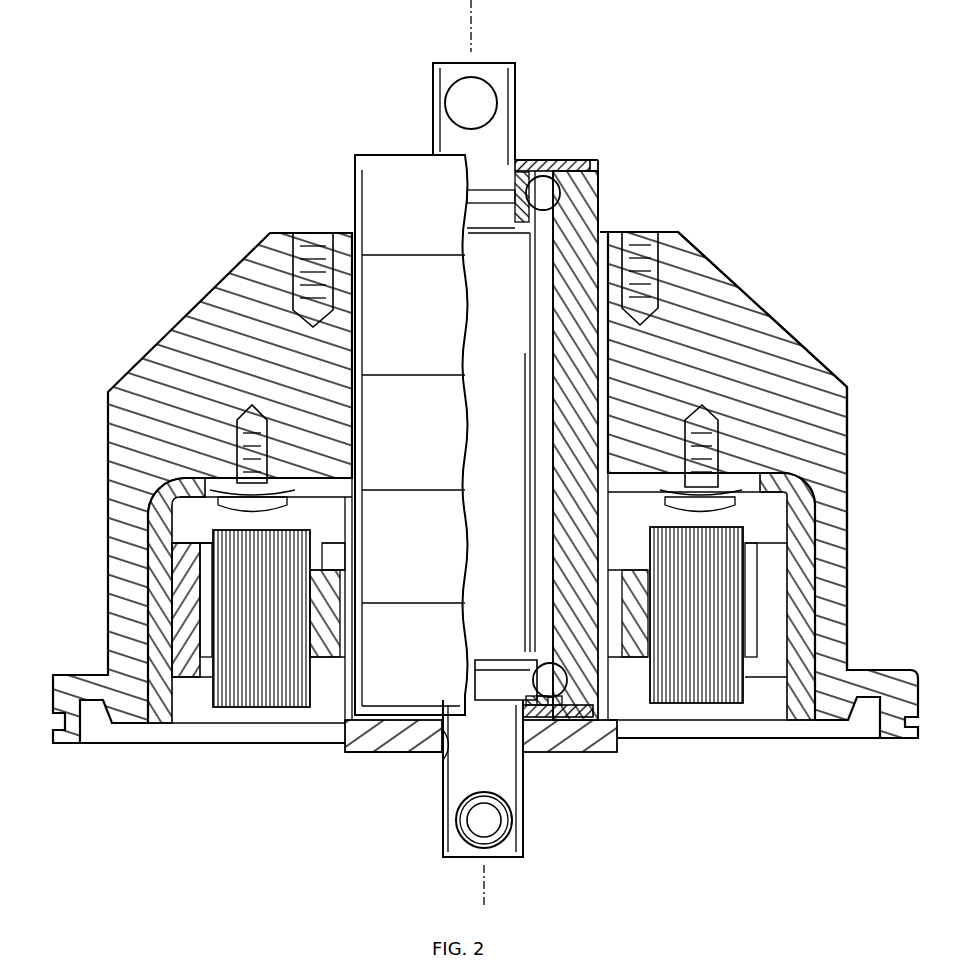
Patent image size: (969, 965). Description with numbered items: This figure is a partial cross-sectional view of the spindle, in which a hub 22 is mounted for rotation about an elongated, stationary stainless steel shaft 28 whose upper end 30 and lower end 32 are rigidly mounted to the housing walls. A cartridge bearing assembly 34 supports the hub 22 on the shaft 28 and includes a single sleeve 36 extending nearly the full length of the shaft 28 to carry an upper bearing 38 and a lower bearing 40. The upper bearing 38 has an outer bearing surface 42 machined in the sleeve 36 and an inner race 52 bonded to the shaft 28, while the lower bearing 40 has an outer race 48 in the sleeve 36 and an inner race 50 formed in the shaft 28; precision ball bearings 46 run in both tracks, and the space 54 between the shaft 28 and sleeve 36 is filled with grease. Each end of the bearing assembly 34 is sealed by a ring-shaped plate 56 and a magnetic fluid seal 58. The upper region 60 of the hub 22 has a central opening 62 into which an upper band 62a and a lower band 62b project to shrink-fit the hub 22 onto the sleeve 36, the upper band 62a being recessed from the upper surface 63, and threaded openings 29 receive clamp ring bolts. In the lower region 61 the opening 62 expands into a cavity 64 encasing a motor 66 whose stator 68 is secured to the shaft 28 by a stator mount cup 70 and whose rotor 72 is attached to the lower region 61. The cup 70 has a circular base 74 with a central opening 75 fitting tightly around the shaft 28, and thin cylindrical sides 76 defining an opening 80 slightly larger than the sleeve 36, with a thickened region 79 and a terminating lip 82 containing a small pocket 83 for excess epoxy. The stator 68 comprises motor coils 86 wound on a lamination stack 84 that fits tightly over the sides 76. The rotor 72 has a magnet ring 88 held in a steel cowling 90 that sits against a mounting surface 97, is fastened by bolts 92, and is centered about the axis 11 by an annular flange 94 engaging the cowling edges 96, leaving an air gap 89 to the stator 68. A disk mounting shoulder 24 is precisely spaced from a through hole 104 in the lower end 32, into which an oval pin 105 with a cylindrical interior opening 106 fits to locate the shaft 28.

The axis 11 is at (472, 8).
The hub 22 is at (688, 250).
The disk mounting shoulder 24 is at (85, 675).
The shaft 28 is at (503, 125).
The threaded openings 29 is at (312, 240).
The upper end 30 is at (432, 66).
The lower end 32 is at (524, 838).
The cartridge bearing assembly 34 is at (615, 165).
The sleeve 36 is at (353, 150).
The upper bearing 38 is at (530, 237).
The lower bearing 40 is at (518, 652).
The outer bearing surface 42 is at (598, 162).
The ball bearings 46 is at (550, 177).
The outer race 48 is at (558, 678).
The inner race 50 is at (492, 678).
The inner race 52 is at (515, 200).
The space 54 is at (540, 408).
The ring-shaped plate 56 is at (548, 158).
The magnetic fluid seal 58 is at (524, 160).
The upper region 60 is at (752, 322).
The lower region 61 is at (835, 550).
The central opening 62 is at (600, 232).
The upper band 62a is at (366, 330).
The lower band 62b is at (366, 453).
The upper surface 63 is at (285, 233).
The cavity 64 is at (348, 522).
The motor 66 is at (198, 710).
The stator 68 is at (243, 712).
The stator mount cup 70 is at (364, 756).
The rotor 72 is at (785, 705).
The circular base 74 is at (405, 752).
The central opening 75 is at (447, 745).
The cylindrical sides 76 is at (350, 653).
The region 79 is at (365, 605).
The opening 80 is at (608, 540).
The lip 82 is at (318, 562).
The pocket 83 is at (322, 572).
The lamination stack 84 is at (334, 578).
The motor coils 86 is at (282, 530).
The magnet ring 88 is at (165, 555).
The air gap 89 is at (200, 560).
The cowling 90 is at (160, 590).
The bolts 92 is at (268, 436).
The annular flange 94 is at (636, 475).
The edges 96 is at (705, 470).
The mounting surface 97 is at (215, 480).
The through hole 104 is at (497, 80).
The pin 105 is at (468, 822).
The cylindrical interior opening 106 is at (487, 838).